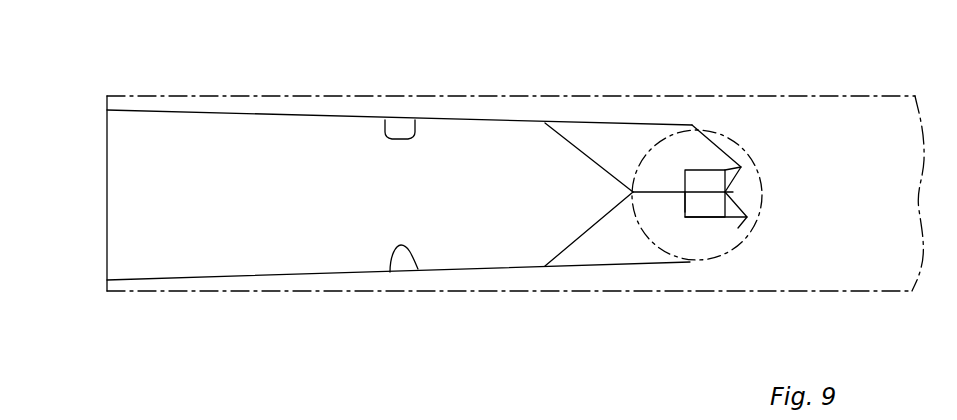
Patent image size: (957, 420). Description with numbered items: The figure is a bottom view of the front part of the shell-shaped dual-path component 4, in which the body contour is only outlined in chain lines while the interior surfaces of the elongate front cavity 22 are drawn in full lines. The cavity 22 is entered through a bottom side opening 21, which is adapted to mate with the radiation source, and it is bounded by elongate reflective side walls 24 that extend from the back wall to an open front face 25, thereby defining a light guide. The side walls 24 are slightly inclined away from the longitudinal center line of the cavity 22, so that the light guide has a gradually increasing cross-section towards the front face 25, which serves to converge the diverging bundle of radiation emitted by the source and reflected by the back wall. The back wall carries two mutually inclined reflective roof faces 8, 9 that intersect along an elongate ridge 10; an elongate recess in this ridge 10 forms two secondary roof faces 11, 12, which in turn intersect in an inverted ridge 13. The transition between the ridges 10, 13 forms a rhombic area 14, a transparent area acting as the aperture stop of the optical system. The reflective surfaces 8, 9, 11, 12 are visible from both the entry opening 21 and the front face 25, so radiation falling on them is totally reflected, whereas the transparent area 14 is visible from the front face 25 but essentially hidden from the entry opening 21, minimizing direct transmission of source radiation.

The shell-shaped component 4 is at (716, 97).
The roof face 8 is at (613, 137).
The roof face 9 is at (613, 245).
The elongate ridge 10 is at (665, 192).
The secondary roof face 11 is at (746, 201).
The secondary roof face 12 is at (740, 168).
The inverted ridge 13 is at (710, 192).
The rhombic area 14 is at (684, 212).
The bottom side opening 21 is at (737, 229).
The front cavity 22 is at (399, 195).
The reflective side wall 24 is at (387, 135).
The front face 25 is at (102, 194).